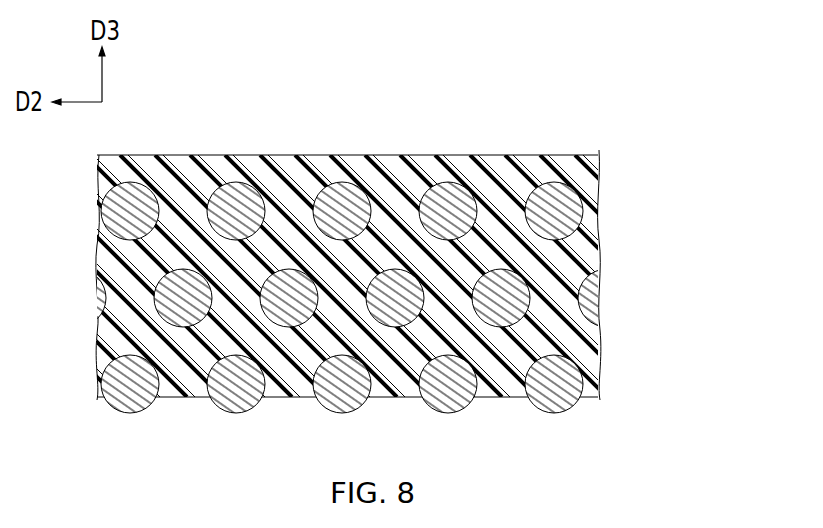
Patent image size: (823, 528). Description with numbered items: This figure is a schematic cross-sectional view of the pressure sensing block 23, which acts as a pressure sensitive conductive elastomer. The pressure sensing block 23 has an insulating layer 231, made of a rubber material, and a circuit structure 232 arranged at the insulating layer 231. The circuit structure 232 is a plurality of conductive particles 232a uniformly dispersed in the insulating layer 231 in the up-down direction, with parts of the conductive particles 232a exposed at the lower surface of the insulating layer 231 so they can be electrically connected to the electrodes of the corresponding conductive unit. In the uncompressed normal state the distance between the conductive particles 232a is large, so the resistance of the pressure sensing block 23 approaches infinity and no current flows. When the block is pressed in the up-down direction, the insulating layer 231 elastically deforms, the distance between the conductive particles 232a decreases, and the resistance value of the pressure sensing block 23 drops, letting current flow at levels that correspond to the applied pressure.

The pressure sensing block 23 is at (580, 93).
The insulating layer 231 is at (317, 158).
The circuit structure 232 is at (708, 357).
The conductive particles 232a is at (600, 274).